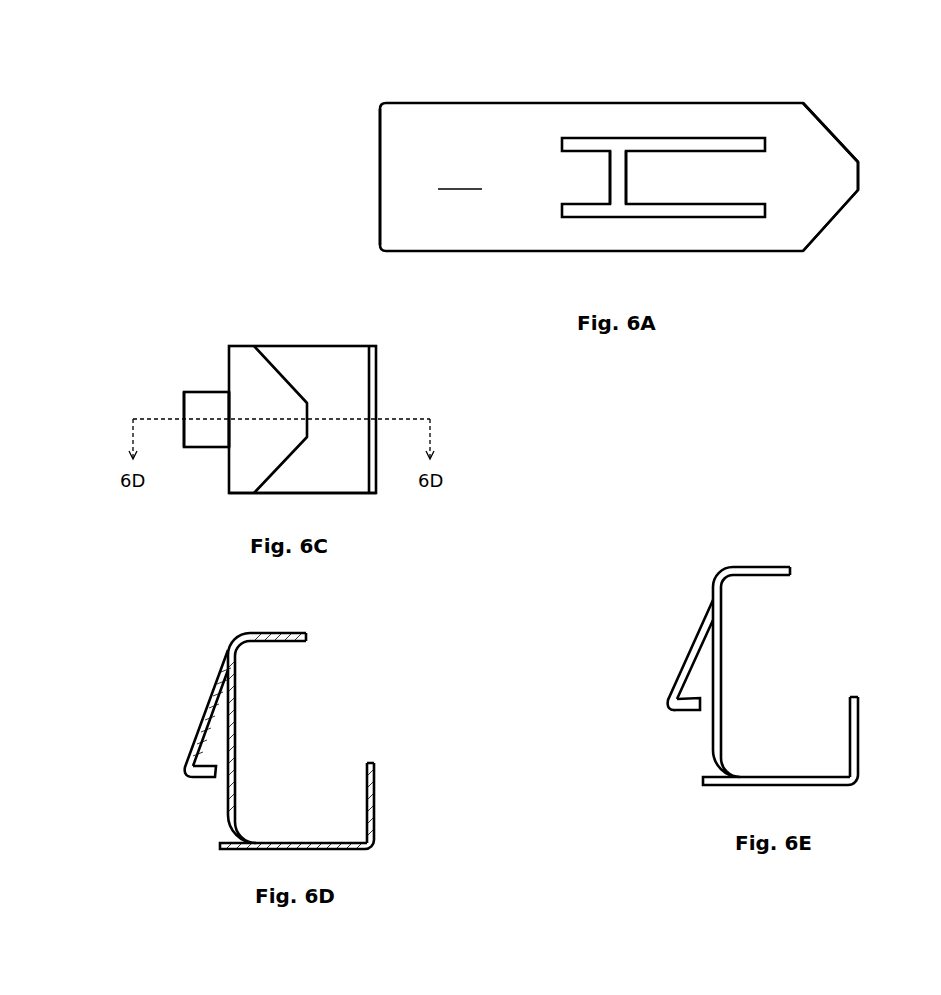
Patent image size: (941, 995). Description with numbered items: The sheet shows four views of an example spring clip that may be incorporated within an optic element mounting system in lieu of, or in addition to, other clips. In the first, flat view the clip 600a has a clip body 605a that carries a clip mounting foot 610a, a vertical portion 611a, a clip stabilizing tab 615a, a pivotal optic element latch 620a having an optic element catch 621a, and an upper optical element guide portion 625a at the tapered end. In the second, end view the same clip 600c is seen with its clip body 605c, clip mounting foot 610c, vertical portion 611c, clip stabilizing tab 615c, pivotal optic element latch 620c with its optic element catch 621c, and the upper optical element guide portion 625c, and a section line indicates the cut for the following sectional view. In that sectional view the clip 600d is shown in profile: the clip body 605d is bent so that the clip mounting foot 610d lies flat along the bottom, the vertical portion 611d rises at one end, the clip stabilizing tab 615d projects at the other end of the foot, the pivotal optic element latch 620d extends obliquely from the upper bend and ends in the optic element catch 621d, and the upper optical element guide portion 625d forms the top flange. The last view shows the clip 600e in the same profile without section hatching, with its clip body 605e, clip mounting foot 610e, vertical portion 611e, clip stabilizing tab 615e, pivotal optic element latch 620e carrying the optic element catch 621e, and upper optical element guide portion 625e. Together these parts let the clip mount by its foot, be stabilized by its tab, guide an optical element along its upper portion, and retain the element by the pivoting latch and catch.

In FIG. 6A, the clip 600a is at (543, 143).
In FIG. 6A, the clip body 605a is at (460, 178).
In FIG. 6A, the clip mounting foot 610a is at (464, 135).
In FIG. 6A, the vertical portion 611a is at (388, 177).
In FIG. 6A, the clip stabilizing tab 615a is at (590, 170).
In FIG. 6A, the pivotal optic element latch 620a is at (688, 180).
In FIG. 6A, the optic element catch 621a is at (628, 187).
In FIG. 6A, the upper optical element guide portion 625a is at (826, 173).
In FIG. 6C, the clip 600c is at (274, 391).
In FIG. 6C, the clip body 605c is at (330, 360).
In FIG. 6C, the clip mounting foot 610c is at (338, 477).
In FIG. 6C, the vertical portion 611c is at (374, 402).
In FIG. 6C, the clip stabilizing tab 615c is at (215, 389).
In FIG. 6C, the pivotal optic element latch 620c is at (220, 438).
In FIG. 6C, the optic element catch 621c is at (184, 400).
In FIG. 6C, the upper optical element guide portion 625c is at (290, 398).
In FIG. 6D, the clip 600d is at (287, 724).
In FIG. 6D, the clip body 605d is at (235, 757).
In FIG. 6D, the clip mounting foot 610d is at (305, 838).
In FIG. 6D, the vertical portion 611d is at (374, 792).
In FIG. 6D, the clip stabilizing tab 615d is at (224, 851).
In FIG. 6D, the pivotal optic element latch 620d is at (198, 721).
In FIG. 6D, the optic element catch 621d is at (205, 778).
In FIG. 6D, the upper optical element guide portion 625d is at (308, 638).
In FIG. 6E, the clip 600e is at (750, 671).
In FIG. 6E, the clip body 605e is at (720, 690).
In FIG. 6E, the clip mounting foot 610e is at (795, 783).
In FIG. 6E, the vertical portion 611e is at (858, 757).
In FIG. 6E, the clip stabilizing tab 615e is at (712, 788).
In FIG. 6E, the pivotal optic element latch 620e is at (680, 660).
In FIG. 6E, the optic element catch 621e is at (689, 710).
In FIG. 6E, the upper optical element guide portion 625e is at (770, 565).